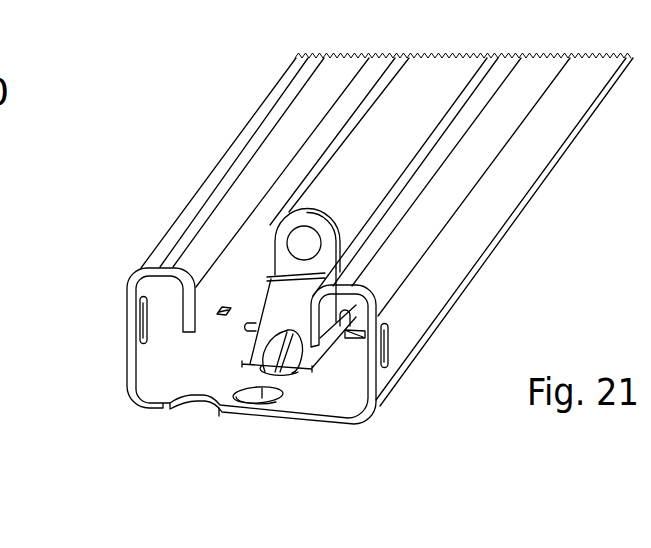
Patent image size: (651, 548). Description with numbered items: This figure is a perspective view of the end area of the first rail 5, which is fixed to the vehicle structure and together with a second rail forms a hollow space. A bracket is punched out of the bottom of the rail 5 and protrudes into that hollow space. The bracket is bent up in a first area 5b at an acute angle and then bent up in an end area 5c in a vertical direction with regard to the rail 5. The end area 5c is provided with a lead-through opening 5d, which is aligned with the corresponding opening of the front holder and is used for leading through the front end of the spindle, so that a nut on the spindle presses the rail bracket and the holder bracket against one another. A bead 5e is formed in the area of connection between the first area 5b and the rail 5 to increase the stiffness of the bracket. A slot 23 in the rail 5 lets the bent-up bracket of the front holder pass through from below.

The rail 5 is at (331, 403).
The first area 5b is at (276, 316).
The end area 5c is at (275, 225).
The lead-through opening 5d is at (303, 243).
The bead 5e is at (278, 372).
The slot 23 is at (366, 333).